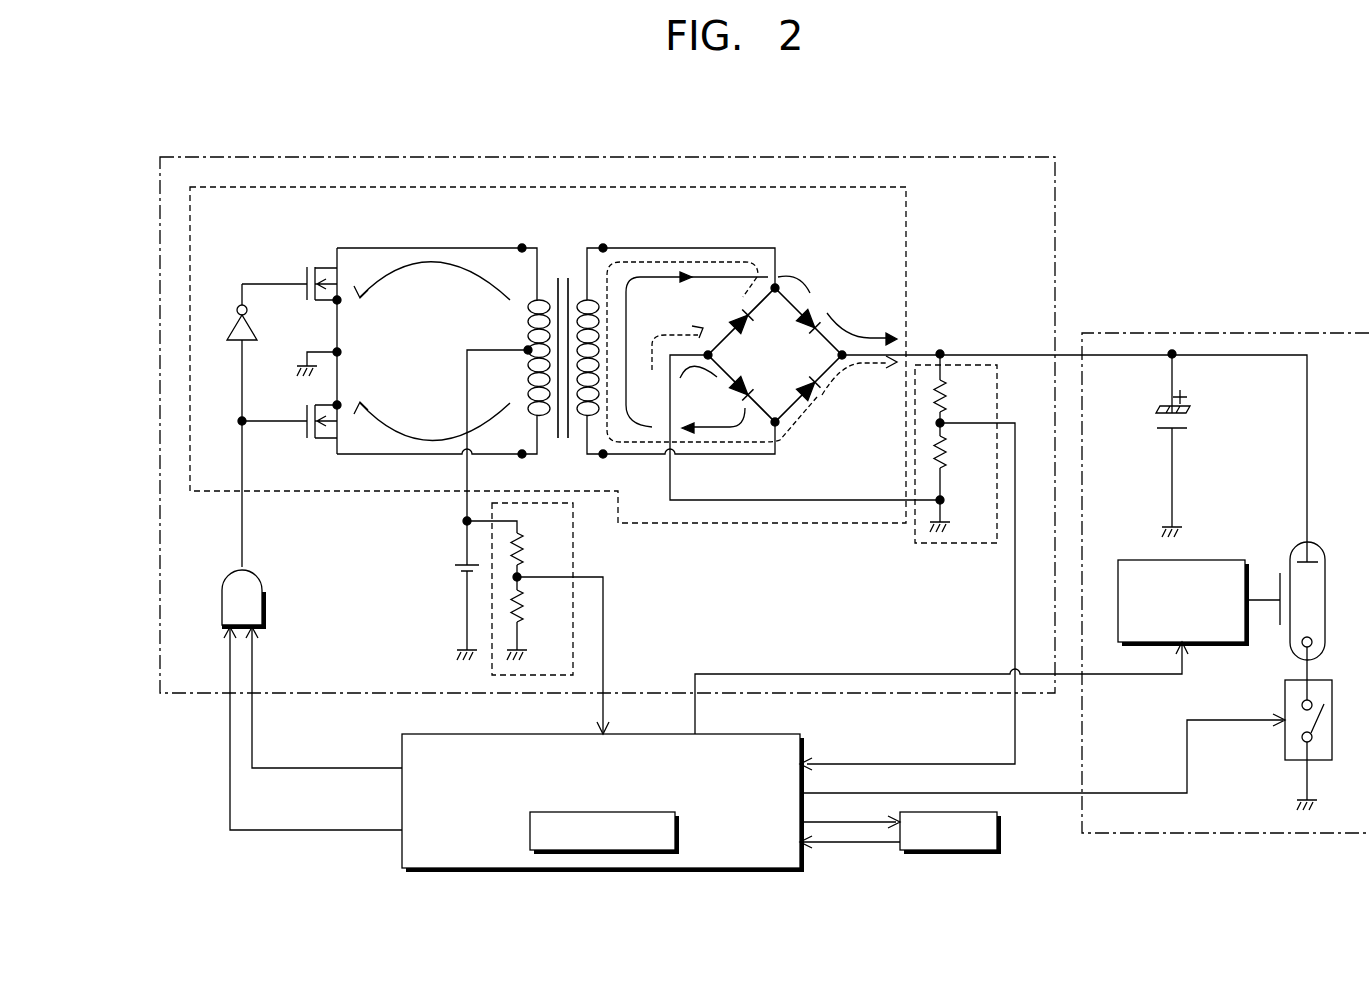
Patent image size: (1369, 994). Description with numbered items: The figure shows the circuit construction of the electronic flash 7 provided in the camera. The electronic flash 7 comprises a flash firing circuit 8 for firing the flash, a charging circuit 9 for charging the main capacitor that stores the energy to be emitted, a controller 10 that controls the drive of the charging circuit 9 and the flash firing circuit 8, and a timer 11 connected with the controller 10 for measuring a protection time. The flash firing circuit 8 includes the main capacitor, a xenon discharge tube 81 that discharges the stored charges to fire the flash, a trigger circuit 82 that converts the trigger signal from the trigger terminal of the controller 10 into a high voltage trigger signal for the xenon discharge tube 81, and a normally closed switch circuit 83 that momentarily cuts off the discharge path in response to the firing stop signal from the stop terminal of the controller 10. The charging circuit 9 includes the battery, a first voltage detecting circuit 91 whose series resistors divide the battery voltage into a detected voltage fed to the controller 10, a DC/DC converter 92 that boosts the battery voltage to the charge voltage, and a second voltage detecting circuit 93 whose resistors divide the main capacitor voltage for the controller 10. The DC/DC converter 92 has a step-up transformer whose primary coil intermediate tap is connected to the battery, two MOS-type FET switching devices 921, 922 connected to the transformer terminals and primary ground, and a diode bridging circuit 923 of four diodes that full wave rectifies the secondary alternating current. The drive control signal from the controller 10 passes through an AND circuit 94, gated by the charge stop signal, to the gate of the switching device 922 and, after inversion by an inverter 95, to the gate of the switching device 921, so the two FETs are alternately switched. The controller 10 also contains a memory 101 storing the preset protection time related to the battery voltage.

The electronic flash 7 is at (574, 110).
The charging circuit 9 is at (680, 156).
The DC/DC converter 92 is at (908, 242).
The switching device 921 is at (432, 300).
The switching device 922 is at (432, 405).
The diode bridging circuit 923 is at (810, 270).
The inverter 95 is at (232, 330).
The AND circuit 94 is at (255, 572).
The first voltage detecting circuit 91 is at (575, 542).
The second voltage detecting circuit 93 is at (968, 545).
The flash firing circuit 8 is at (1213, 332).
The trigger circuit 82 is at (1203, 560).
The xenon discharge tube 81 is at (1323, 560).
The switch circuit 83 is at (1333, 705).
The controller 10 is at (795, 733).
The timer 11 is at (1000, 836).
The memory 101 is at (530, 820).